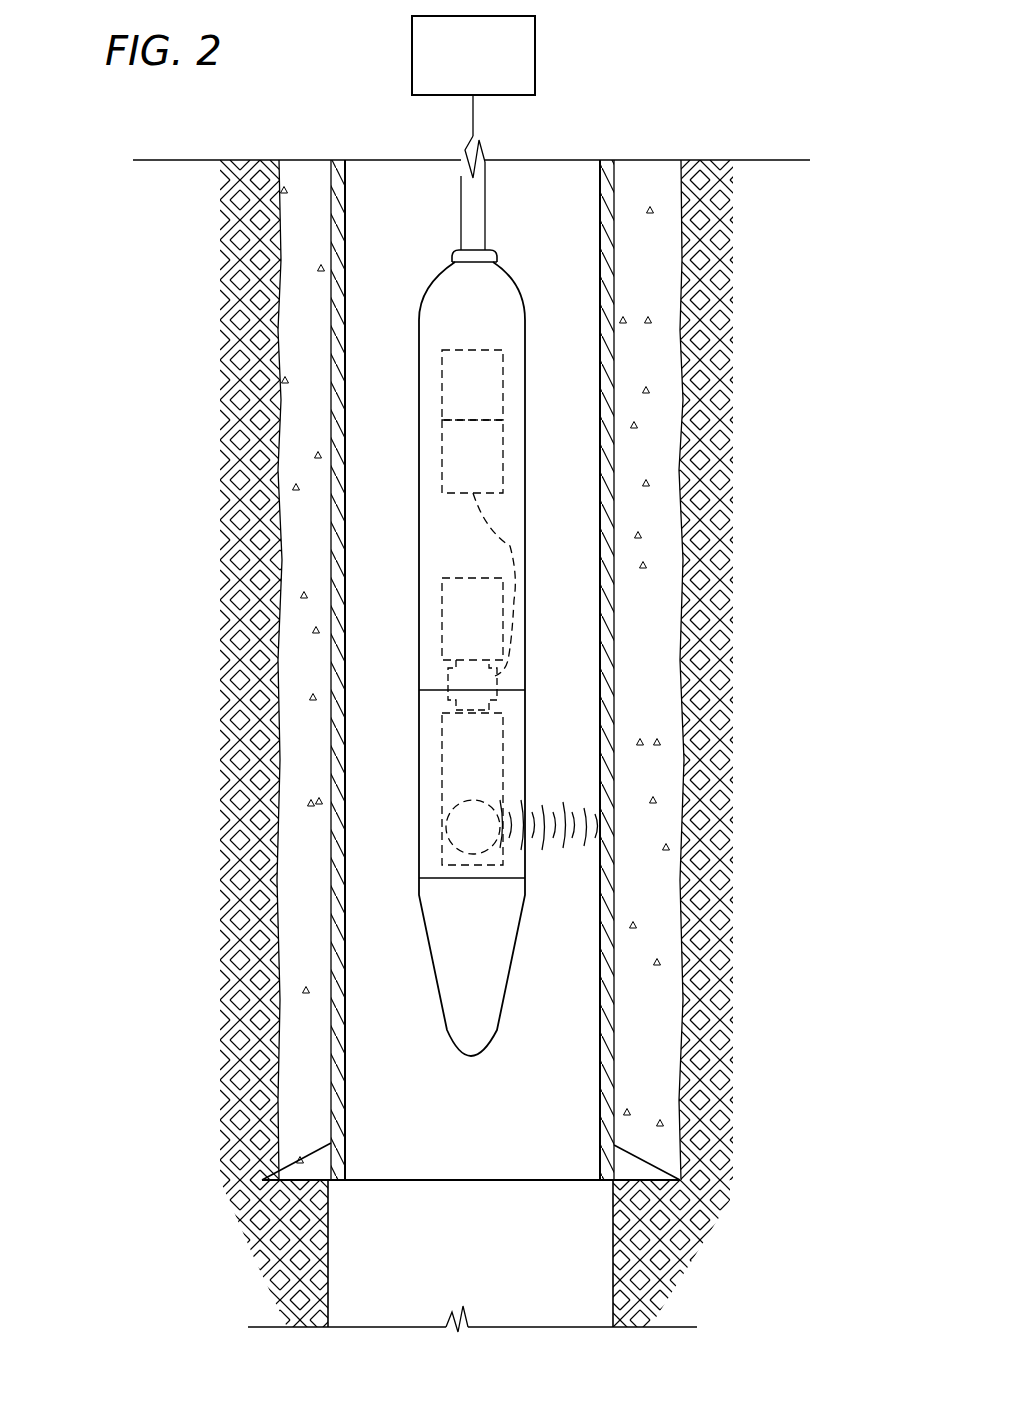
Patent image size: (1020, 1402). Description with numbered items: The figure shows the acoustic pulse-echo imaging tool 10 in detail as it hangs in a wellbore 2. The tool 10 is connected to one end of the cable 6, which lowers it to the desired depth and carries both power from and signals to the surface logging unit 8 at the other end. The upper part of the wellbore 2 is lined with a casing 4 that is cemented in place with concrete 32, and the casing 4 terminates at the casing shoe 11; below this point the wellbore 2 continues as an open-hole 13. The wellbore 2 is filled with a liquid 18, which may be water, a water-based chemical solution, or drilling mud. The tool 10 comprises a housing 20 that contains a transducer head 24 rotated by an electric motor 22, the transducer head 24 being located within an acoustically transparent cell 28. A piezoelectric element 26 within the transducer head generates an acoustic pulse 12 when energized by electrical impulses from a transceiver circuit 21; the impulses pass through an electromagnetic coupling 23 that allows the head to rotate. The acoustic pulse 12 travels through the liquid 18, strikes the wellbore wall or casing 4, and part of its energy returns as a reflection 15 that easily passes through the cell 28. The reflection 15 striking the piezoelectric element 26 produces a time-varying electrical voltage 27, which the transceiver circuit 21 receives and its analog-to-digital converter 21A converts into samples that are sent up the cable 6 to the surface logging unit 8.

The wellbore 2 is at (302, 625).
The casing 4 is at (335, 742).
The cable 6 is at (487, 208).
The surface logging unit 8 is at (536, 53).
The acoustic pulse-echo imaging tool 10 is at (514, 320).
The casing shoe 11 is at (300, 1163).
The acoustic pulse 12 is at (554, 846).
The open-hole 13 is at (370, 1275).
The reflection 15 is at (545, 812).
The liquid 18 is at (373, 985).
The housing 20 is at (434, 314).
The transceiver circuit 21 is at (442, 462).
The analog-to-digital converter 21A is at (442, 384).
The electric motor 22 is at (442, 620).
The electromagnetic coupling 23 is at (448, 680).
The transducer head 24 is at (442, 785).
The piezoelectric element 26 is at (452, 846).
The time-varying electrical voltage 27 is at (512, 546).
The acoustically transparent cell 28 is at (527, 722).
The concrete 32 is at (308, 248).